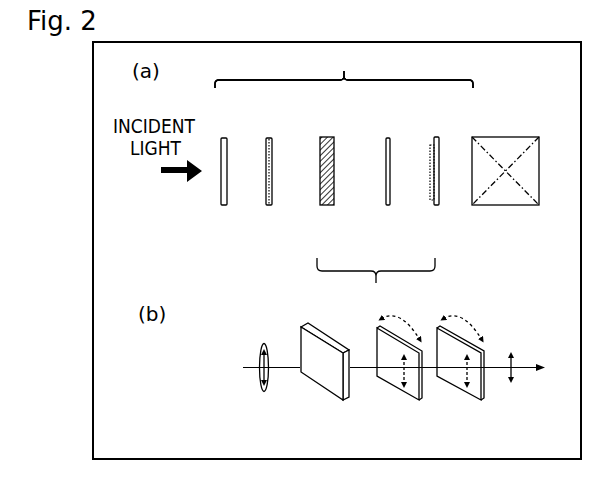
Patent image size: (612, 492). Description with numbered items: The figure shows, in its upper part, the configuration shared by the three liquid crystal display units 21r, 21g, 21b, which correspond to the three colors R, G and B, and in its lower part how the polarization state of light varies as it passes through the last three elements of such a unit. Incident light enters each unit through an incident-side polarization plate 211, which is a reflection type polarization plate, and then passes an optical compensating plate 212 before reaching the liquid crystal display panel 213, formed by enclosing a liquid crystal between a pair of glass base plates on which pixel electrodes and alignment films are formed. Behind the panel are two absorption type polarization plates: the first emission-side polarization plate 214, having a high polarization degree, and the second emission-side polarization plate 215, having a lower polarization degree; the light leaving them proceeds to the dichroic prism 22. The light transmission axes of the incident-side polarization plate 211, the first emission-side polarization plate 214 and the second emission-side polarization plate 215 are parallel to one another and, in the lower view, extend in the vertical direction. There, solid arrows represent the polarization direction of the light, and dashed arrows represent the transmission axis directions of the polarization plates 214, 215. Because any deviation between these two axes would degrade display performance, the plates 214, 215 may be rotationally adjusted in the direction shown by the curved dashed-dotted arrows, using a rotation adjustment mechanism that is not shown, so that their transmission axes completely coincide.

The liquid crystal display unit 21r is at (344, 66).
The liquid crystal display unit 21g is at (344, 66).
The liquid crystal display unit 21b is at (344, 66).
The incident-side polarization plate 211 is at (225, 138).
The optical compensating plate 212 is at (270, 138).
The liquid crystal display panel 213 is at (328, 137).
The first emission-side polarization plate 214 is at (388, 138).
The second emission-side polarization plate 215 is at (438, 138).
The dichroic prism 22 is at (503, 138).